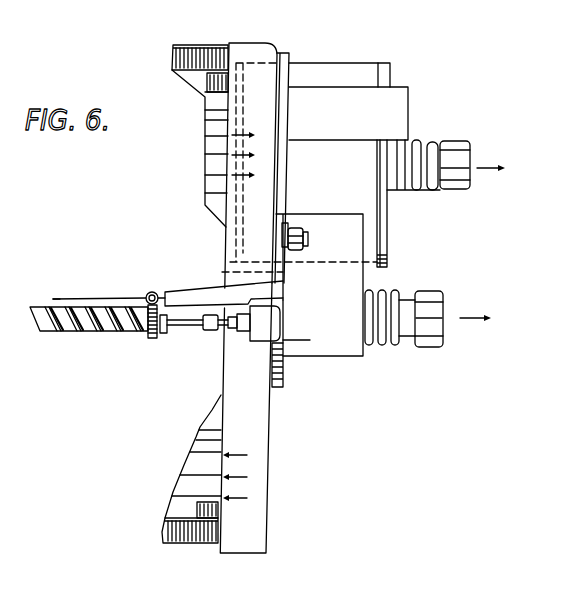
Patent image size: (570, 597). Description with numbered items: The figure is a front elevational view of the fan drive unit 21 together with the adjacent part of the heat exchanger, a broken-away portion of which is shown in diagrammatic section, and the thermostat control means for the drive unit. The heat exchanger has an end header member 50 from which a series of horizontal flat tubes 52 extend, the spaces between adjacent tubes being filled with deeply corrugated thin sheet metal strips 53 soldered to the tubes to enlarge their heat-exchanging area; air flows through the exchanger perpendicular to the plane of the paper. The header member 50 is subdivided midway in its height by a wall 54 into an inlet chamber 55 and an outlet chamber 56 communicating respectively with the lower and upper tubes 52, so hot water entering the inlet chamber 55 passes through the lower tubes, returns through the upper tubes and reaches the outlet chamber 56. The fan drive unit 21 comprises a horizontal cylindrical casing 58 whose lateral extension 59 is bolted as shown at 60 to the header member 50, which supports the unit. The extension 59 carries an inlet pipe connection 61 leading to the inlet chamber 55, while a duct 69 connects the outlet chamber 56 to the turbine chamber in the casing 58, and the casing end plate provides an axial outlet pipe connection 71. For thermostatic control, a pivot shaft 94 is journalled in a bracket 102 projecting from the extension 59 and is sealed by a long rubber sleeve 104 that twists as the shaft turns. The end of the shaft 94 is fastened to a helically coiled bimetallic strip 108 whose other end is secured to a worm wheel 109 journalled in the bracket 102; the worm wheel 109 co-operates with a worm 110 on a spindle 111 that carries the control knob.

The fan drive unit 21 is at (396, 237).
The end header member 50 is at (263, 450).
The flat tubes 52 is at (212, 47).
The corrugated thin sheet metal strips 53 is at (173, 60).
The wall 54 is at (227, 272).
The inlet chamber 55 is at (257, 415).
The outlet chamber 56 is at (237, 192).
The cylindrical casing 58 is at (390, 68).
The lateral extension 59 is at (356, 347).
The bolts 60 is at (295, 232).
The inlet pipe connection 61 is at (438, 313).
The duct 69 is at (408, 113).
The axial outlet pipe connection 71 is at (465, 148).
The pivot shaft 94 is at (188, 323).
The bracket 102 is at (172, 292).
The rubber sleeve 104 is at (226, 326).
The bimetallic strip 108 is at (67, 335).
The worm wheel 109 is at (150, 338).
The worm 110 is at (146, 294).
The spindle 111 is at (53, 293).